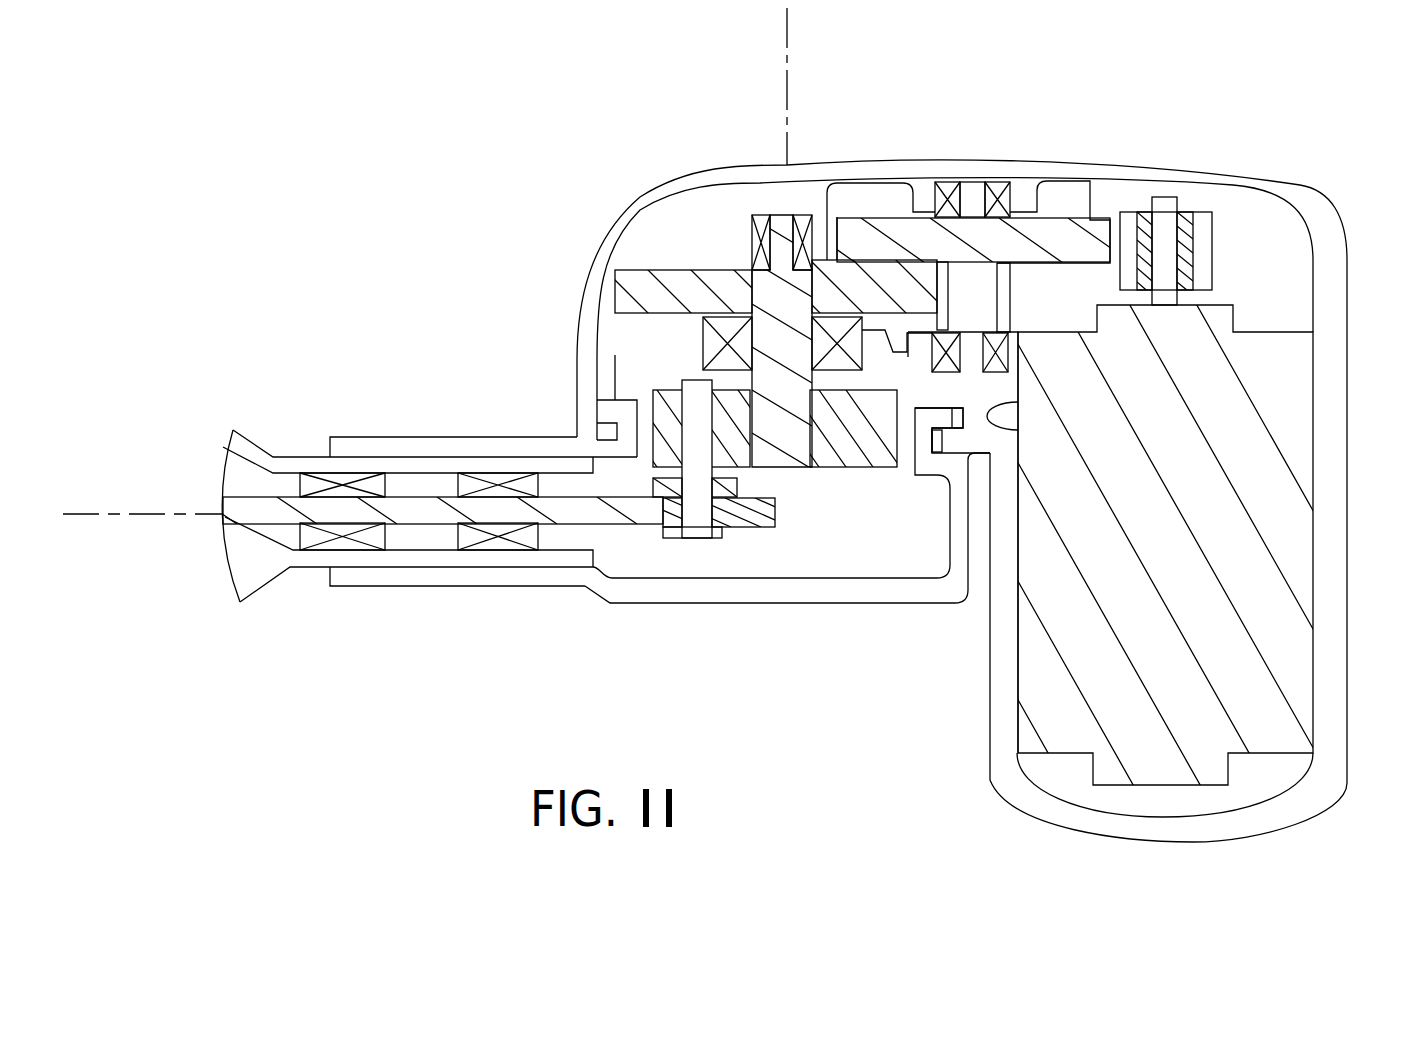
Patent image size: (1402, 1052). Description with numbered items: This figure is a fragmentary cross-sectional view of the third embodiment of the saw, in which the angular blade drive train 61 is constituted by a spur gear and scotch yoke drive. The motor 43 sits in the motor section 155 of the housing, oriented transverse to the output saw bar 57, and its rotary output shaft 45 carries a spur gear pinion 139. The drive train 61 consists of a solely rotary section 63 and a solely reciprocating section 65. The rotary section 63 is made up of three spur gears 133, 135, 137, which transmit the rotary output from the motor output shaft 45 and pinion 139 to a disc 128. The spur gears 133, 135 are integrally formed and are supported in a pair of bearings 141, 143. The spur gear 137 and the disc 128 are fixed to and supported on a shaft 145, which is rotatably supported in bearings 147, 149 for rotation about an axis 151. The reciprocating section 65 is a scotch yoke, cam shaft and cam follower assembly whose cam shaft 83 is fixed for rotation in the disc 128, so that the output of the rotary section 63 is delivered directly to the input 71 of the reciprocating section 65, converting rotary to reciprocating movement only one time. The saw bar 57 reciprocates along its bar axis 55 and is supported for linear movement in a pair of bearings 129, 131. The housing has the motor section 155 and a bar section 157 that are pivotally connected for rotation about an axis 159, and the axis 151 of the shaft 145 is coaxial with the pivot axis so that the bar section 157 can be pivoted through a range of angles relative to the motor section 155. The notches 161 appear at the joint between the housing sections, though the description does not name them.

The angular blade drive train 61 is at (706, 118).
The rotary section 63 is at (990, 118).
The axis 159 is at (787, 120).
The axis 151 is at (792, 110).
The bearing 141 is at (948, 185).
The spur gear 133 is at (1082, 235).
The rotary output shaft 45 is at (1163, 203).
The spur gear pinion 139 is at (1207, 245).
The bearing 147 is at (753, 240).
The spur gear 137 is at (615, 295).
The housing notch 161 is at (597, 408).
The bearing 149 is at (703, 345).
The spur gear 135 is at (1010, 290).
The bearing 143 is at (1010, 365).
The bearing 129 is at (317, 473).
The output saw bar 57 is at (423, 510).
The bearing 131 is at (493, 477).
The bar axis 55 is at (137, 512).
The bar section 157 is at (400, 580).
The reciprocating section 65 is at (631, 553).
The cam shaft 83 is at (697, 530).
The input 71 is at (750, 522).
The shaft 145 is at (793, 467).
The disc 128 is at (860, 453).
The motor 43 is at (1196, 564).
The motor section 155 is at (1000, 742).